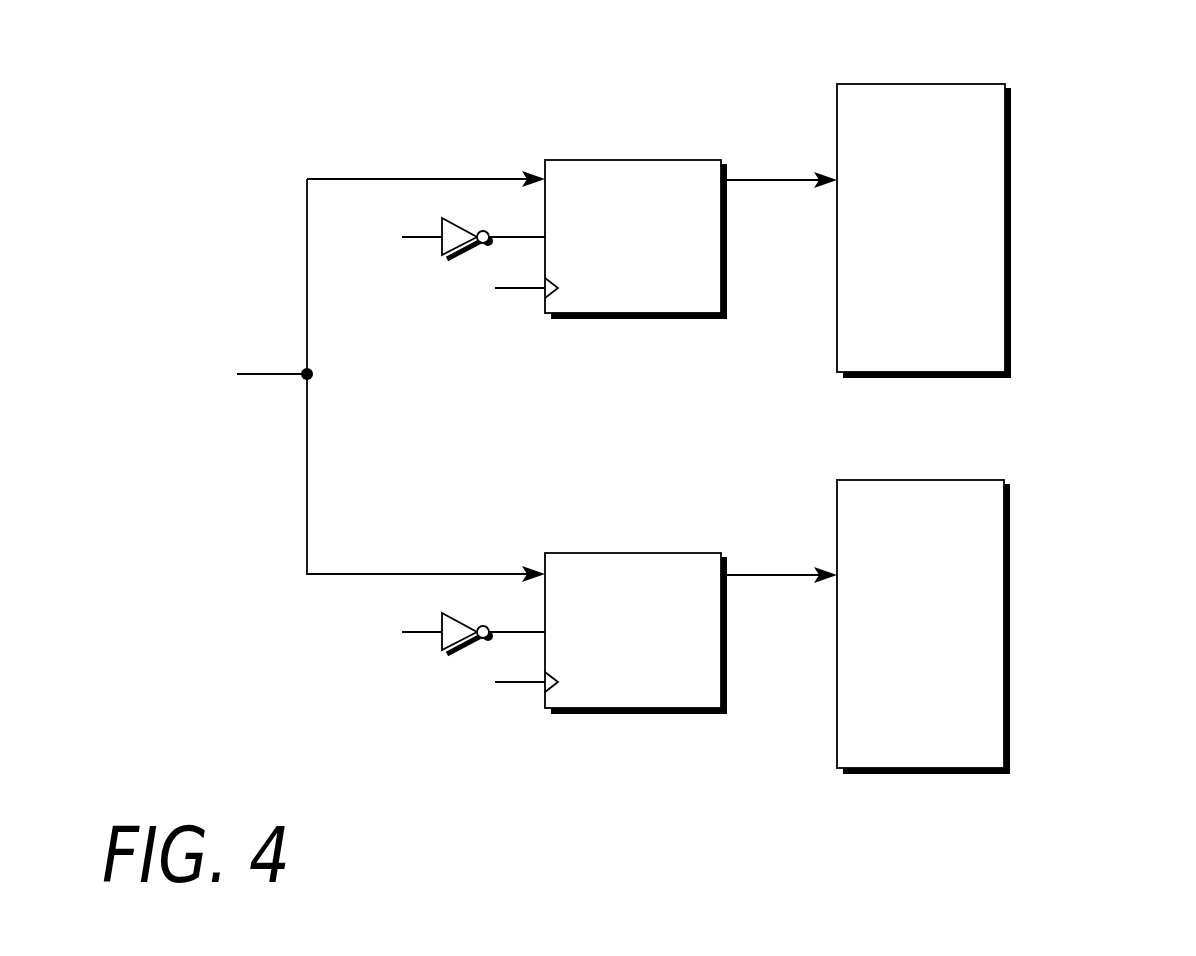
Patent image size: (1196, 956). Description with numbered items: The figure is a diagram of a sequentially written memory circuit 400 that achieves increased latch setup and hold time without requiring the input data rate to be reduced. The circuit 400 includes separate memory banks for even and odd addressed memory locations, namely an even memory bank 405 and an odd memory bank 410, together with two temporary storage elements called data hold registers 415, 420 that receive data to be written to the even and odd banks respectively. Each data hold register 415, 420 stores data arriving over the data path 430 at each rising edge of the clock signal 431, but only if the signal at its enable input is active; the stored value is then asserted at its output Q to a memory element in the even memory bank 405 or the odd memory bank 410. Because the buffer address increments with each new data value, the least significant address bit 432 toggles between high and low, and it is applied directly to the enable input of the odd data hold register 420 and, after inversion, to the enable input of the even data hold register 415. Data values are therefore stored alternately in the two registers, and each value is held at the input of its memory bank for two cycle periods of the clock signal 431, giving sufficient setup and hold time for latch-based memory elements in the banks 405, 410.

The sequentially written memory circuit 400 is at (1137, 99).
The even memory bank 405 is at (988, 213).
The odd memory bank 410 is at (984, 521).
The data hold register 415 is at (625, 171).
The data hold register 420 is at (624, 563).
The data path 430 is at (178, 367).
The clock signal 431 is at (452, 289).
The least significant bit of the FIFO buffer address 432 is at (345, 261).